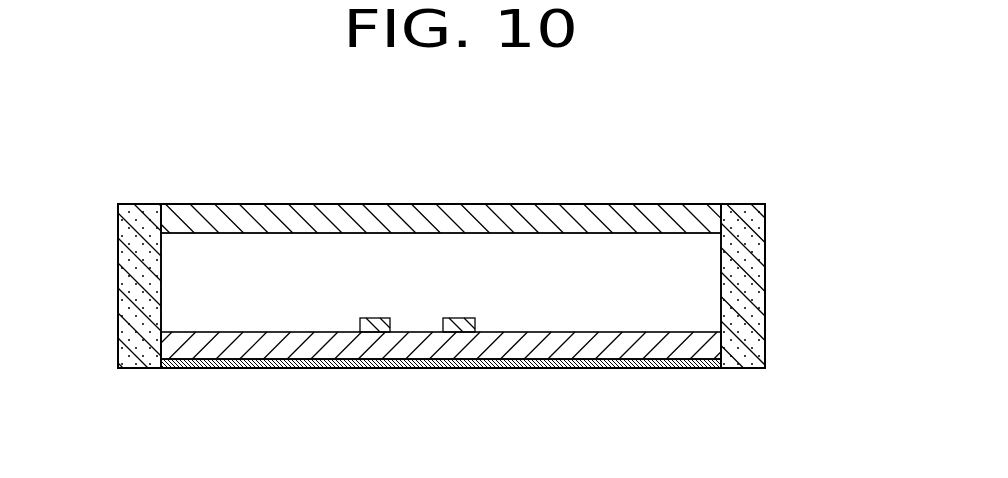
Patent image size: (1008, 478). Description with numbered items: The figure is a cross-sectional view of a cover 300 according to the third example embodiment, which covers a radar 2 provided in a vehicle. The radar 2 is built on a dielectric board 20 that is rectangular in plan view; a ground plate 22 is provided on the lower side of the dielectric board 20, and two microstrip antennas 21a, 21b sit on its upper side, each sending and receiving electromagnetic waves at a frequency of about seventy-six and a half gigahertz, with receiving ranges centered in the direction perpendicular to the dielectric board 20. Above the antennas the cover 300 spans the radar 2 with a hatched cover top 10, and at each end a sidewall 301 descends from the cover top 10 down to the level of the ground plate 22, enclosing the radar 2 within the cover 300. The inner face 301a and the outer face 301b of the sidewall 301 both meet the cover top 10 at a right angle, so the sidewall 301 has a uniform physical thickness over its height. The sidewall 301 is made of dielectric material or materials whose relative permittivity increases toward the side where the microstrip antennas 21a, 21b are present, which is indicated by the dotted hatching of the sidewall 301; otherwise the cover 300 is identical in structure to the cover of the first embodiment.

The radar 2 is at (441, 387).
The cover top 10 is at (503, 215).
The dielectric board 20 is at (503, 352).
The microstrip antenna 21a is at (377, 332).
The microstrip antenna 21b is at (458, 332).
The ground plate 22 is at (543, 362).
The cover 300 is at (737, 200).
The sidewall 301 is at (121, 270).
The inner face 301a is at (722, 277).
The outer face 301b is at (763, 290).